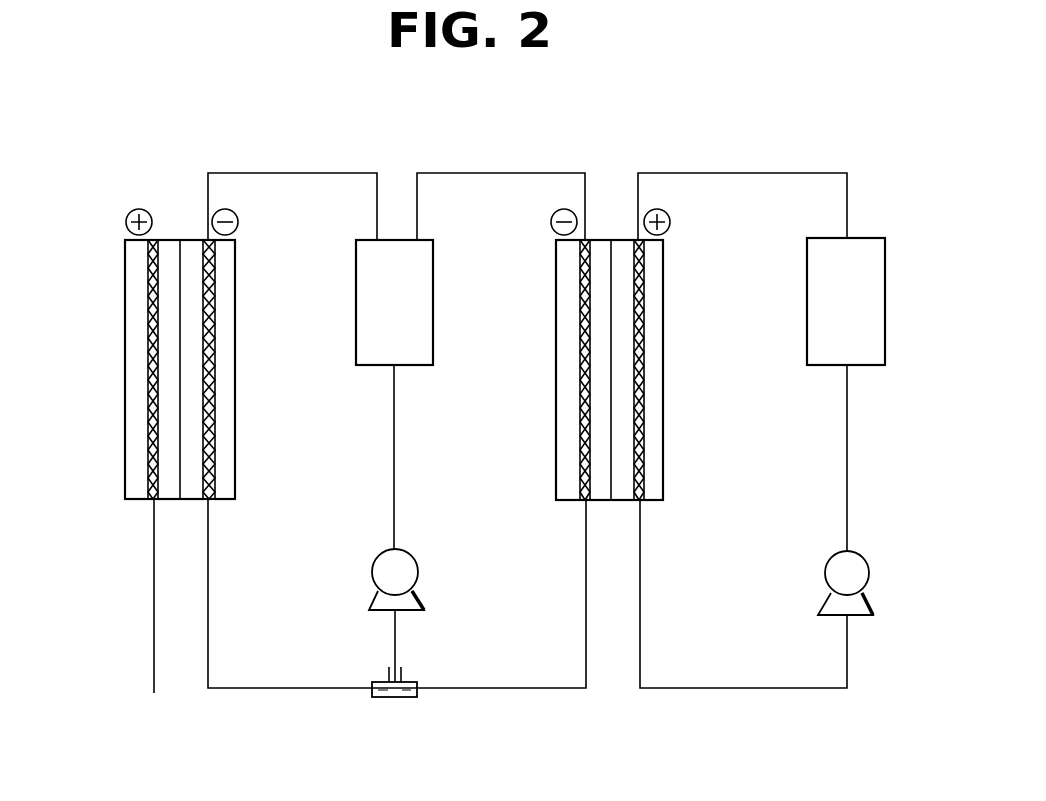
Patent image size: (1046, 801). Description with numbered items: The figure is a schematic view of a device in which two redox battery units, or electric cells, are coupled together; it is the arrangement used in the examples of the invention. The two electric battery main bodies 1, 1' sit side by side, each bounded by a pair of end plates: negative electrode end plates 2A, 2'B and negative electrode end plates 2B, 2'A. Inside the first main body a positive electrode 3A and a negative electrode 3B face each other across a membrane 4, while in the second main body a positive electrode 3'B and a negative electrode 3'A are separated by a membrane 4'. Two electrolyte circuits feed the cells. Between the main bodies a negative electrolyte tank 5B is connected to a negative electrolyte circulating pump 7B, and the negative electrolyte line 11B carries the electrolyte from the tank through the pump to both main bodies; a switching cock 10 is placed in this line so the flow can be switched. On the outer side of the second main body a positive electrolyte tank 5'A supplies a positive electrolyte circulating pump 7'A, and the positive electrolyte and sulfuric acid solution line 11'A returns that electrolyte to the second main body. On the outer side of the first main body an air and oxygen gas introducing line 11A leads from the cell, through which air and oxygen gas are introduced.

The electric battery main body 1 is at (180, 379).
The electric battery main body 1' is at (615, 363).
The negative electrode end plate 2A is at (125, 305).
The negative electrode end plate 2B is at (235, 297).
The negative electrode end plate 2'A is at (530, 370).
The negative electrode end plate 2'B is at (694, 370).
The positive electrode 3A is at (150, 483).
The negative electrode 3B is at (212, 487).
The negative electrode 3'A is at (533, 371).
The positive electrode 3'B is at (690, 370).
The membrane 4 is at (229, 369).
The membrane 4' is at (668, 370).
The negative electrolyte tank 5B is at (394, 302).
The positive electrolyte tank 5'A is at (846, 301).
The negative electrolyte circulating pump 7B is at (376, 600).
The positive electrolyte circulating pump 7'A is at (809, 583).
The switching cock 10 is at (398, 697).
The air and oxygen gas introducing line 11A is at (154, 627).
The negative electrolyte line 11B is at (208, 632).
The positive electrolyte and sulfuric acid solution line 11'A is at (743, 526).